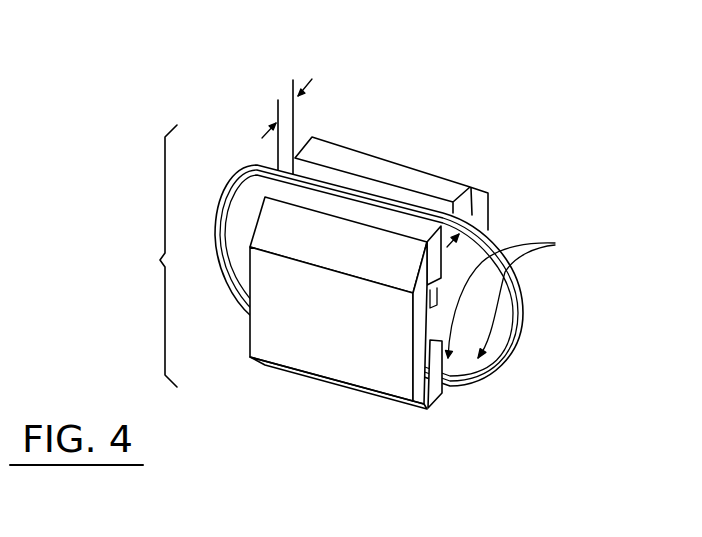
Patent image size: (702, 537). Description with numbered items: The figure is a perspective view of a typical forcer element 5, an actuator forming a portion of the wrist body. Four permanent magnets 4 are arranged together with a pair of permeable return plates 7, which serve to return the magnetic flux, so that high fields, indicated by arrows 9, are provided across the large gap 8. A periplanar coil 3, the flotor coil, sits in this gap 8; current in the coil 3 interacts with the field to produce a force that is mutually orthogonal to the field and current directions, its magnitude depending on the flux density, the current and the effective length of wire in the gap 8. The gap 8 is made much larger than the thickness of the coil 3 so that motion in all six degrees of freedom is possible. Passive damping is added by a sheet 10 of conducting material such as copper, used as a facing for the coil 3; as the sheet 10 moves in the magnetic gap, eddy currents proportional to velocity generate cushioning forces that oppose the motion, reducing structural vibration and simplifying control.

The periplanar coil 3 is at (517, 322).
The permanent magnets 4 is at (393, 223).
The forcer element 5 is at (156, 256).
The permeable return plates 7 is at (375, 378).
The gap 8 is at (287, 97).
The arrows 9 is at (513, 293).
The sheet of conducting material 10 is at (470, 250).